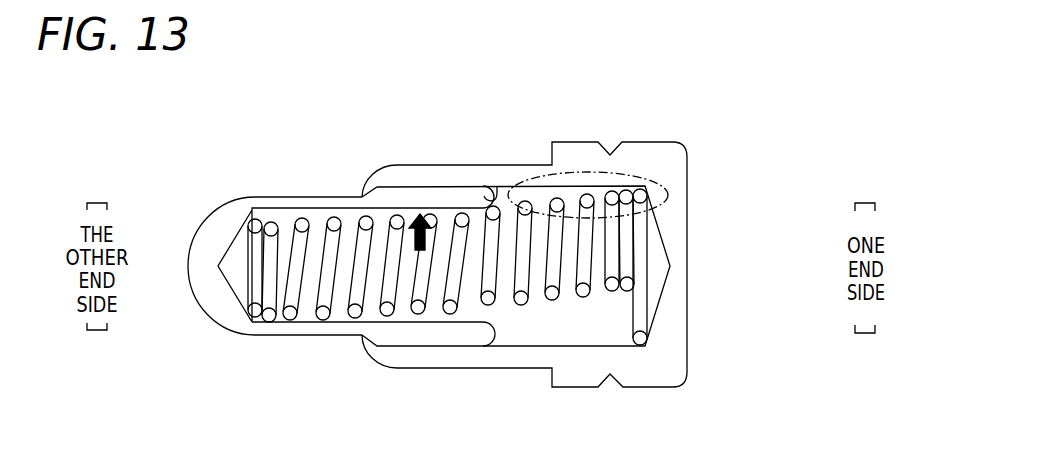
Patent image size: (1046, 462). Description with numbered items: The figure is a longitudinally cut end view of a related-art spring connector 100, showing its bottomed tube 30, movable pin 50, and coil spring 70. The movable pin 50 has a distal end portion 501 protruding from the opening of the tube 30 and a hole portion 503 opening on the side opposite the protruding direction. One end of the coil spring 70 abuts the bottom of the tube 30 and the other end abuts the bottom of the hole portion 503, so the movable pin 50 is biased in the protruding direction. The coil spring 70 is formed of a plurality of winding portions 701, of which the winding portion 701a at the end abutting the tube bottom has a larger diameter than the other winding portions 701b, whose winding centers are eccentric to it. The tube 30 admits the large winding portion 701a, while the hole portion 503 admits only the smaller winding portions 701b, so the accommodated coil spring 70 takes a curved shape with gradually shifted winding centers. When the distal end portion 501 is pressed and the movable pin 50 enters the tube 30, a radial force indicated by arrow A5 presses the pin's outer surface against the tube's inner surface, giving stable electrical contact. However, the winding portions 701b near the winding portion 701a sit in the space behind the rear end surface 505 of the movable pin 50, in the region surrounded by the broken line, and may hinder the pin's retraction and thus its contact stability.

The spring connector 100 is at (607, 102).
The tube 30 is at (677, 222).
The movable pin 50 is at (315, 333).
The distal end portion 501 is at (202, 212).
The hole portion 503 is at (403, 322).
The rear end surface 505 is at (495, 193).
The arrow A5 is at (413, 216).
The coil spring 70 is at (560, 312).
The winding portions 701 is at (525, 271).
The winding portion at one end portion 701a is at (645, 292).
The other winding portions 701b is at (337, 221).